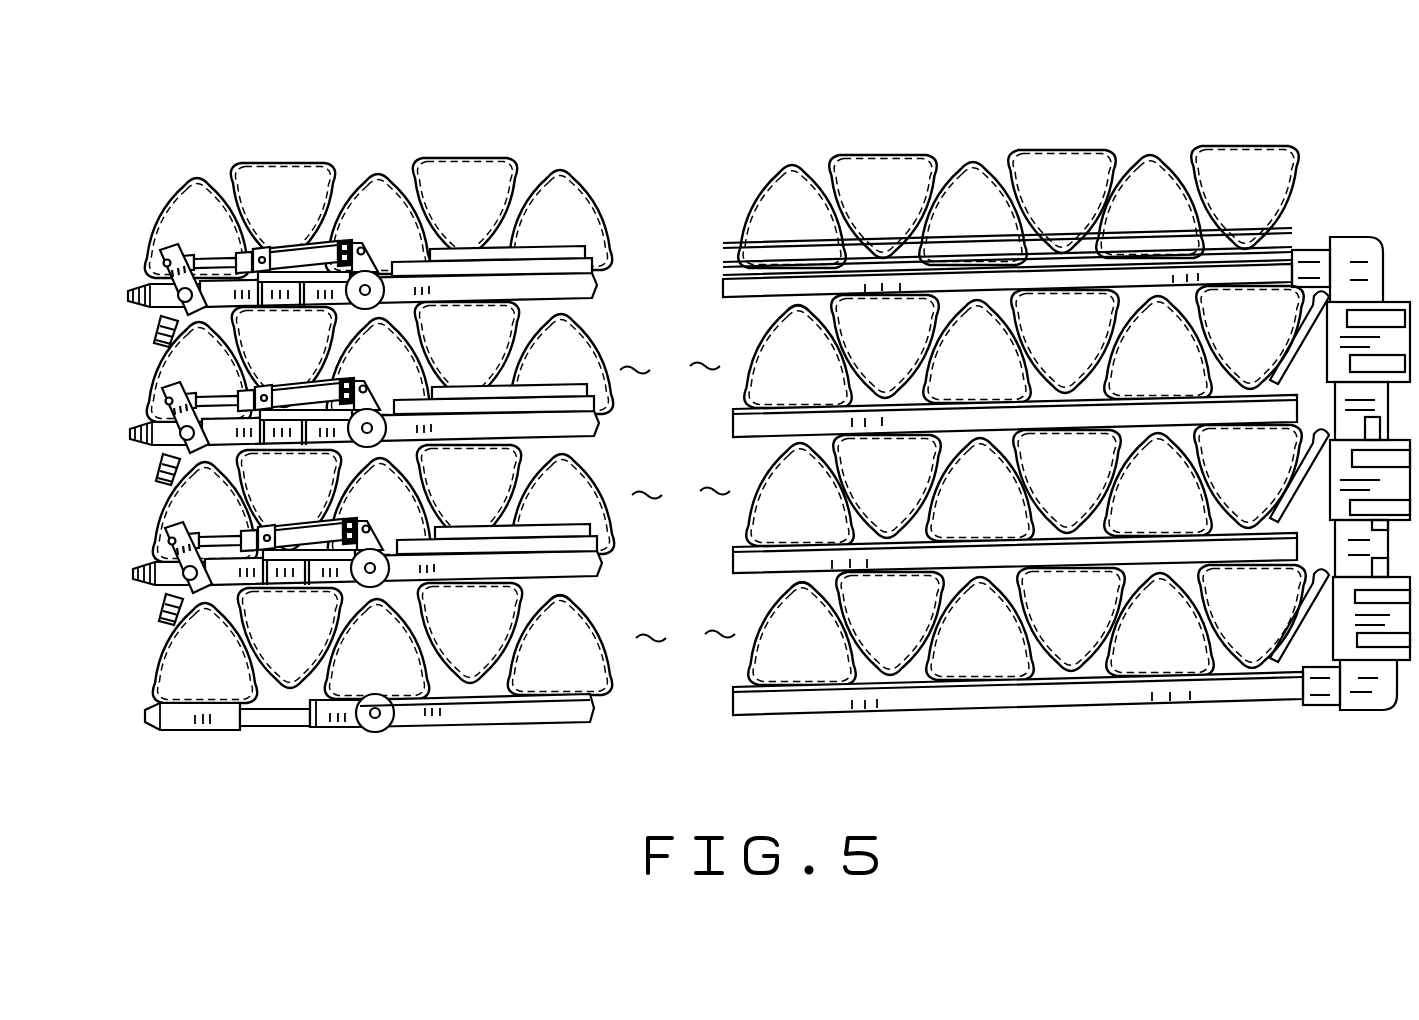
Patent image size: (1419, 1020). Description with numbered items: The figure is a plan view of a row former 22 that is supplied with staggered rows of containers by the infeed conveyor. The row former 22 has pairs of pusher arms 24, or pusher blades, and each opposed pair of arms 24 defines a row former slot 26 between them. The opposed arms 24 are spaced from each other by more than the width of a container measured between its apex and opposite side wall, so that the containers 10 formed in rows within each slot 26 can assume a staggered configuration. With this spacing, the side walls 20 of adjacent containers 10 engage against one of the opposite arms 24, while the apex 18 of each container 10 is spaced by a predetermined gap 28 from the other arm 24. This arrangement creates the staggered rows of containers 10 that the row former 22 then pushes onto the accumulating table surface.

The container 10 is at (452, 158).
The apex 18 is at (558, 593).
The side wall 20 is at (560, 694).
The row former 22 is at (1322, 188).
The pusher arm 24 is at (448, 427).
The row former slot 26 is at (677, 501).
The gap 28 is at (586, 596).